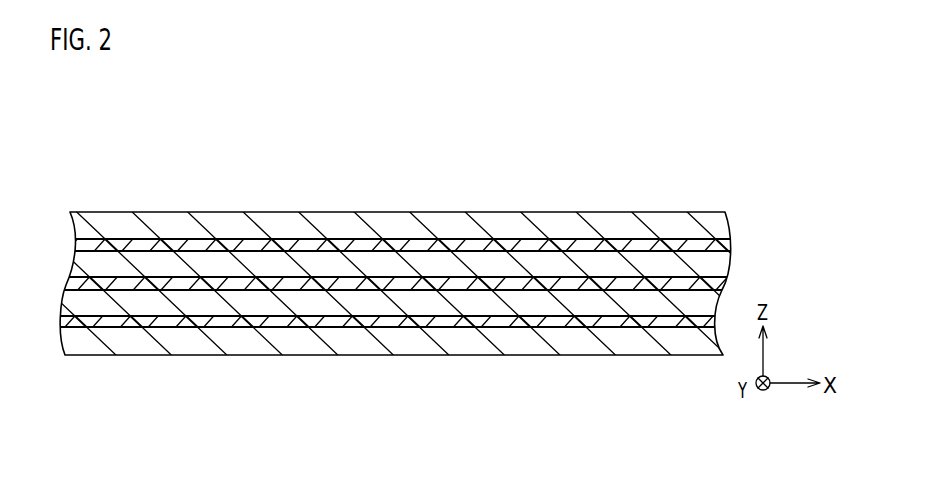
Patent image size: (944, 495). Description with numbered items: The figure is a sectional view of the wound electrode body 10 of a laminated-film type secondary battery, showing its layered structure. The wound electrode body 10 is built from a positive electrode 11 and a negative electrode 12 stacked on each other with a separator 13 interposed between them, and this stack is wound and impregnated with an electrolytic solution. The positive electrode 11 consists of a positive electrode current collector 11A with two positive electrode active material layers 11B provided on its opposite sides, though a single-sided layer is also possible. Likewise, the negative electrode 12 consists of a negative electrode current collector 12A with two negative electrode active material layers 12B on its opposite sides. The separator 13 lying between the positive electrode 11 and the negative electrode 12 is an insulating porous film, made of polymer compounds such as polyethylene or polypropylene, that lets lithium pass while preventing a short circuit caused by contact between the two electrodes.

The wound electrode body 10 is at (735, 130).
The positive electrode 11 is at (307, 114).
The positive electrode current collector 11A is at (390, 245).
The positive electrode active material layer 11B is at (127, 245).
The negative electrode 12 is at (608, 114).
The negative electrode current collector 12A is at (390, 321).
The negative electrode active material layer 12B is at (386, 322).
The separator 13 is at (390, 283).